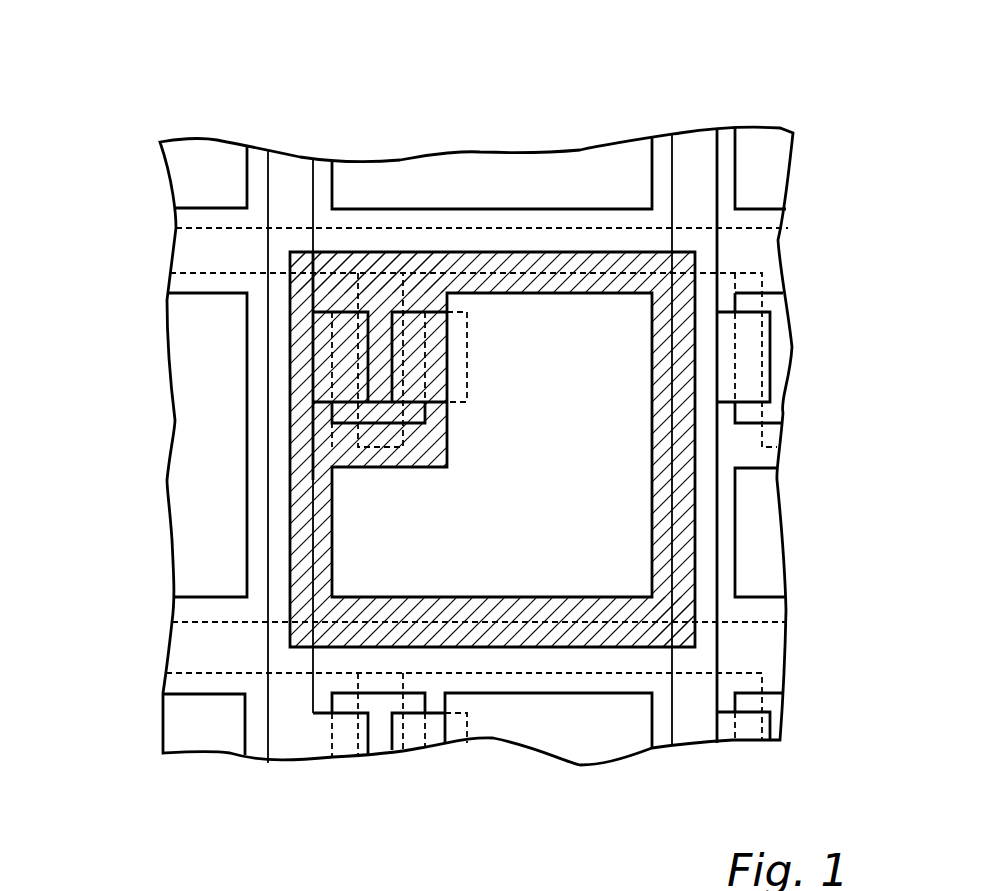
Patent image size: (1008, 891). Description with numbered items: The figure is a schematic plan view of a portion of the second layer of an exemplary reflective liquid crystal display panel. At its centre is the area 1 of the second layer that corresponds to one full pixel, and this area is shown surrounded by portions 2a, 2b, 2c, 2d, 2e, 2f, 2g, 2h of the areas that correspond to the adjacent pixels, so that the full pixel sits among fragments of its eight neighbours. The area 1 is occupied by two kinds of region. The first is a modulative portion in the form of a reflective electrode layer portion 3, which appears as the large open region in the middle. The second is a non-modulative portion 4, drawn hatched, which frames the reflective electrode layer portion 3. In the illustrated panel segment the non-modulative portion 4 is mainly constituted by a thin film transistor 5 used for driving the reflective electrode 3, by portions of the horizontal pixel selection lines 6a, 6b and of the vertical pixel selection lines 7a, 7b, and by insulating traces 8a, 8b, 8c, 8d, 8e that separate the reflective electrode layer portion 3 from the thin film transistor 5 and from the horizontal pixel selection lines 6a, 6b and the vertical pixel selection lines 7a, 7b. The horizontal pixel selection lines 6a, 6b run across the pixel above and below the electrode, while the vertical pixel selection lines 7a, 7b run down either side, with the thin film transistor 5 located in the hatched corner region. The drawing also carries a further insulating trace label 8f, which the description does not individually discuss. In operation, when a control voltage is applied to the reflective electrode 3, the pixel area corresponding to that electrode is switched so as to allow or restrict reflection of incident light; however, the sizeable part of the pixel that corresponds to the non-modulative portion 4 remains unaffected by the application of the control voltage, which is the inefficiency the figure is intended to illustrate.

The area corresponding to a full pixel 1 is at (697, 446).
The portion of area corresponding to an adjacent pixel 2a is at (198, 115).
The portion of area corresponding to an adjacent pixel 2b is at (498, 182).
The portion of area corresponding to an adjacent pixel 2c is at (763, 170).
The portion of area corresponding to an adjacent pixel 2d is at (755, 543).
The portion of area corresponding to an adjacent pixel 2e is at (772, 710).
The portion of area corresponding to an adjacent pixel 2f is at (493, 708).
The portion of area corresponding to an adjacent pixel 2g is at (202, 732).
The portion of area corresponding to an adjacent pixel 2h is at (198, 498).
The reflective electrode layer portion 3 is at (622, 543).
The non-modulative portion 4 is at (685, 605).
The thin film transistor 5 is at (380, 355).
The horizontal pixel selection line 6a is at (728, 253).
The horizontal pixel selection line 6b is at (730, 658).
The vertical pixel selection line 7a is at (290, 165).
The vertical pixel selection line 7b is at (697, 143).
The insulating trace 8a is at (563, 283).
The insulating trace 8b is at (662, 363).
The insulating trace 8c is at (525, 607).
The insulating trace 8d is at (320, 555).
The insulating trace 8e is at (430, 303).
The connection portion 8f is at (377, 457).